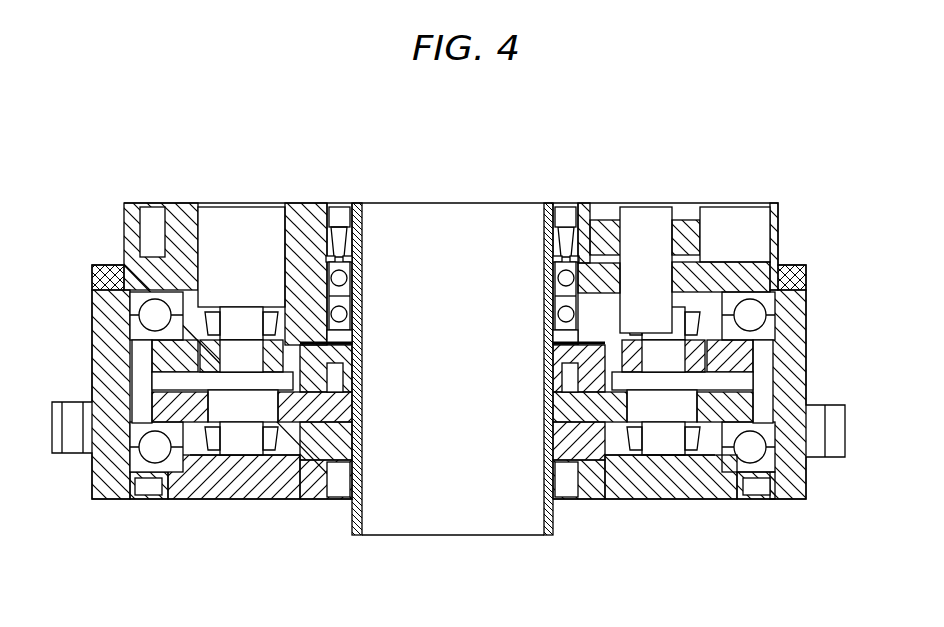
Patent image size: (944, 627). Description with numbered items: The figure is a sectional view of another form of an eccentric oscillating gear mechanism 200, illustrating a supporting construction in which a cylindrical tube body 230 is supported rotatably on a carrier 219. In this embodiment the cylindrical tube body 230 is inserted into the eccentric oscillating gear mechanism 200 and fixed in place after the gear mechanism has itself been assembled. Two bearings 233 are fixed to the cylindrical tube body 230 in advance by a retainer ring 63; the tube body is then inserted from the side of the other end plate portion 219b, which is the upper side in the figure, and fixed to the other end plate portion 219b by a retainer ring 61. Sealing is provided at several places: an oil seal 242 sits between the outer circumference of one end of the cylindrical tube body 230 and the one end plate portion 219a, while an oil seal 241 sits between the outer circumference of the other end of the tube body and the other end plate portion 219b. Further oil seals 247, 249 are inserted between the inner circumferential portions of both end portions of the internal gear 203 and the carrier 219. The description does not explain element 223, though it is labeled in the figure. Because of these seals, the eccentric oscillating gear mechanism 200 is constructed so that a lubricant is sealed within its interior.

The eccentric oscillating gear mechanism 200 is at (732, 171).
The internal gear 203 is at (800, 343).
The carrier 219 is at (196, 354).
The one end plate portion 219a is at (192, 497).
The other end plate portion 219b is at (181, 213).
The retainer ring 61 is at (327, 257).
The retainer ring 63 is at (352, 257).
The bearings 233 is at (350, 284).
The oil seal 241 is at (565, 215).
The oil seal 242 is at (573, 490).
The oil seal 247 is at (795, 278).
The oil seal 249 is at (750, 493).
The bearing retainer 223 is at (297, 422).
The cylindrical tube body 230 is at (352, 535).